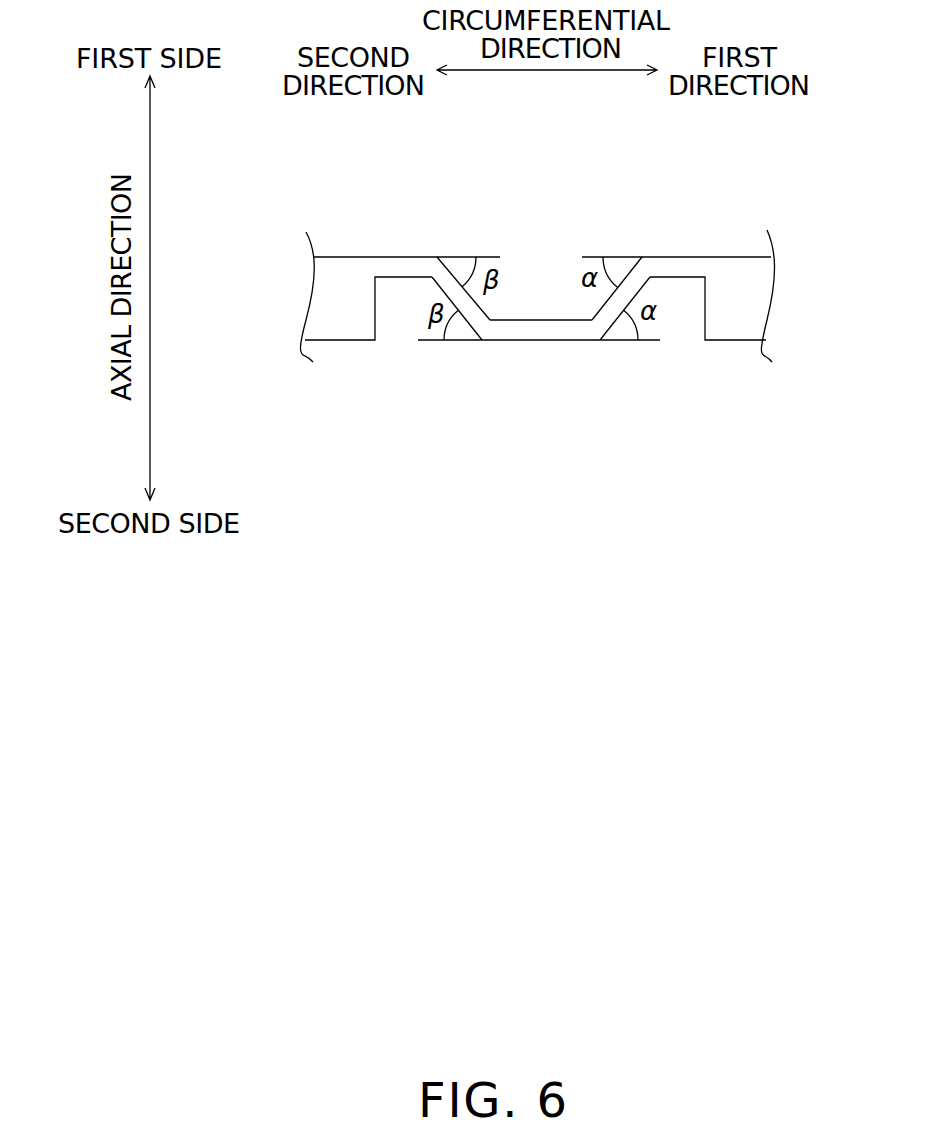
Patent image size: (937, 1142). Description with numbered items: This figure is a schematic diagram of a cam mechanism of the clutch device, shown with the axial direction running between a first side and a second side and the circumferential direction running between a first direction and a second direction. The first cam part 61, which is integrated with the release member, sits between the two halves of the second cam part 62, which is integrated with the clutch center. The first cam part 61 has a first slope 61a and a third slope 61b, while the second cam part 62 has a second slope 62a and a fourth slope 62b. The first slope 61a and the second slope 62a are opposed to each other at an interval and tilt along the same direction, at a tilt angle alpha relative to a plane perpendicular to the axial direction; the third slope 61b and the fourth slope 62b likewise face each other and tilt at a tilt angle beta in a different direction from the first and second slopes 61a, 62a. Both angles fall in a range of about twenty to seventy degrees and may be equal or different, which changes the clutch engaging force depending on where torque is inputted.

The first cam part 61 is at (544, 333).
The first slope 61a is at (608, 305).
The third slope 61b is at (472, 305).
The second cam part 62 is at (401, 267).
The second slope 62a is at (639, 284).
The fourth slope 62b is at (444, 284).